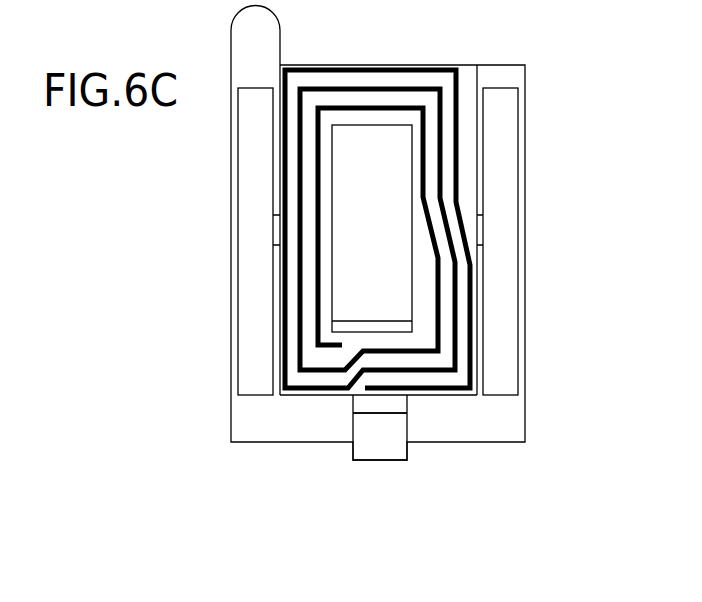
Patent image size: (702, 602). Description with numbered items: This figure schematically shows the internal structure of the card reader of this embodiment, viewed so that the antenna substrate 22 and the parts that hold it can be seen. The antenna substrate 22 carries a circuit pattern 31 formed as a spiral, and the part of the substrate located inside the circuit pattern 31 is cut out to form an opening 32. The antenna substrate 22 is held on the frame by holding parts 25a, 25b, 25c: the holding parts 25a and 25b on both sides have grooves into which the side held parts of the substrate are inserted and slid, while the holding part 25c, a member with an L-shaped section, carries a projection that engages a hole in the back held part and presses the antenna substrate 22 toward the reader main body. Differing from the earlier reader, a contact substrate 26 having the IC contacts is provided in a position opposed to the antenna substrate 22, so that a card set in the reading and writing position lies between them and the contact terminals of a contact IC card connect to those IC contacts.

The antenna substrate 22 is at (466, 73).
The holding part 25a is at (250, 213).
The holding part 25b is at (512, 197).
The holding part 25c is at (365, 447).
The contact substrate 26 is at (381, 324).
The circuit pattern 31 is at (373, 68).
The opening 32 is at (385, 180).